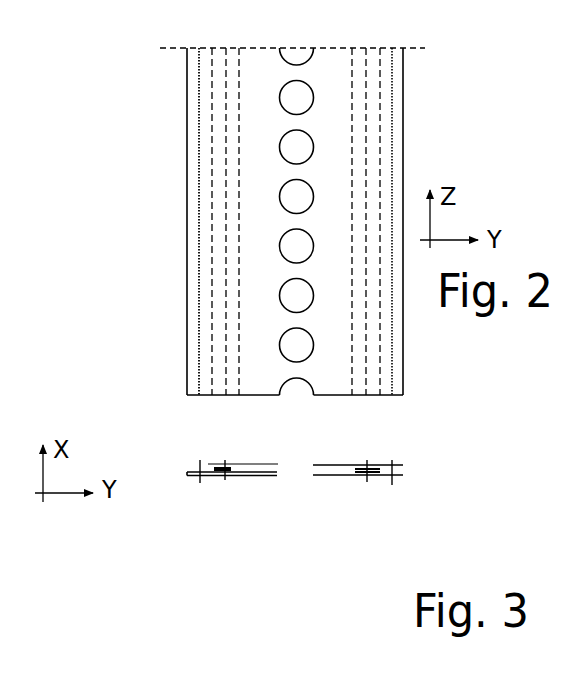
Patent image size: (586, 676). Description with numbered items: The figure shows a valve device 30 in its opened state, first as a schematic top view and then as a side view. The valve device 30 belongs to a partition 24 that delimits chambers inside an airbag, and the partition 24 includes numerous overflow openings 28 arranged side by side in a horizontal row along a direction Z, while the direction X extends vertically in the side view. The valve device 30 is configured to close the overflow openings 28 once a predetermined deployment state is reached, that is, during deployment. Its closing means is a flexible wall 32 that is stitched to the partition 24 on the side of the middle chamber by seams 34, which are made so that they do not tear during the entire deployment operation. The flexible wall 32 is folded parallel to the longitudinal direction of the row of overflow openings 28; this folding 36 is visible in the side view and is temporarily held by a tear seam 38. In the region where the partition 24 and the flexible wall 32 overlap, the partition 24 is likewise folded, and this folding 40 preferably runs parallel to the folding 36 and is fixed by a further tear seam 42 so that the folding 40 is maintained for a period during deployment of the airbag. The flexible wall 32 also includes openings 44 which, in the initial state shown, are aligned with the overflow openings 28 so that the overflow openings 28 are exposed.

In FIG. 3, the partition 24 is at (262, 478).
In FIG. 2, the overflow openings 28 is at (300, 90).
In FIG. 3, the overflow openings 28 is at (288, 477).
In FIG. 2, the valve device 30 is at (186, 193).
In FIG. 2, the flexible wall 32 is at (252, 102).
In FIG. 3, the flexible wall 32 is at (249, 465).
In FIG. 2, the seams 34 is at (201, 294).
In FIG. 3, the seams 34 is at (193, 478).
In FIG. 3, the folding 36 is at (247, 480).
In FIG. 3, the tear seam 38 is at (225, 481).
In FIG. 3, the folding 40 is at (410, 480).
In FIG. 3, the further tear seam 42 is at (367, 481).
In FIG. 2, the openings 44 is at (297, 197).
In FIG. 3, the openings 44 is at (302, 465).